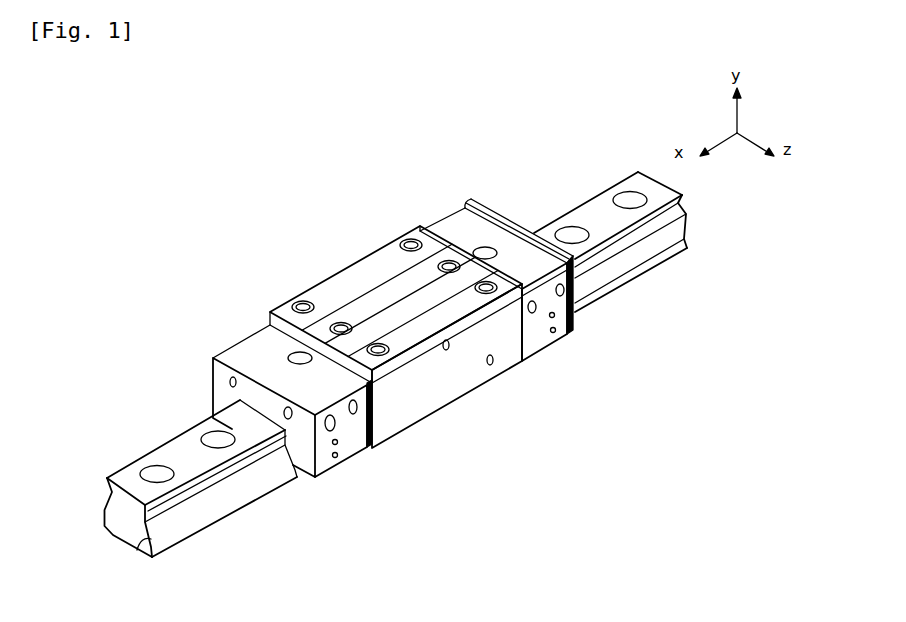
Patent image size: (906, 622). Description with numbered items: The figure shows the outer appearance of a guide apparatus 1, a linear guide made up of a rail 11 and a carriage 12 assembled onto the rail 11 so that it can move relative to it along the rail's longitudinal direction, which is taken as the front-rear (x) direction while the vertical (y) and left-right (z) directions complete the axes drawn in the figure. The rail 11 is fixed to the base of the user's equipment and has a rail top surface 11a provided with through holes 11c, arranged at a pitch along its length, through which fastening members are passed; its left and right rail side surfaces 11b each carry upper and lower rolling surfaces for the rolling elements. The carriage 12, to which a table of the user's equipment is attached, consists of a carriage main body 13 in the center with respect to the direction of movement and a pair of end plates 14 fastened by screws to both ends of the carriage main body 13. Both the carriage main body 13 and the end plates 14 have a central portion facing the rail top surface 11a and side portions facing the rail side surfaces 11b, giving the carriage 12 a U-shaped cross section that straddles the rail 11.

The guide apparatus 1 is at (196, 259).
The rail 11 is at (220, 507).
The rail top surface 11a is at (130, 478).
The rail side surface 11b is at (140, 549).
The through hole 11c is at (157, 472).
The carriage 12 is at (573, 427).
The carriage main body 13 is at (453, 390).
The end plate 14 is at (354, 443).